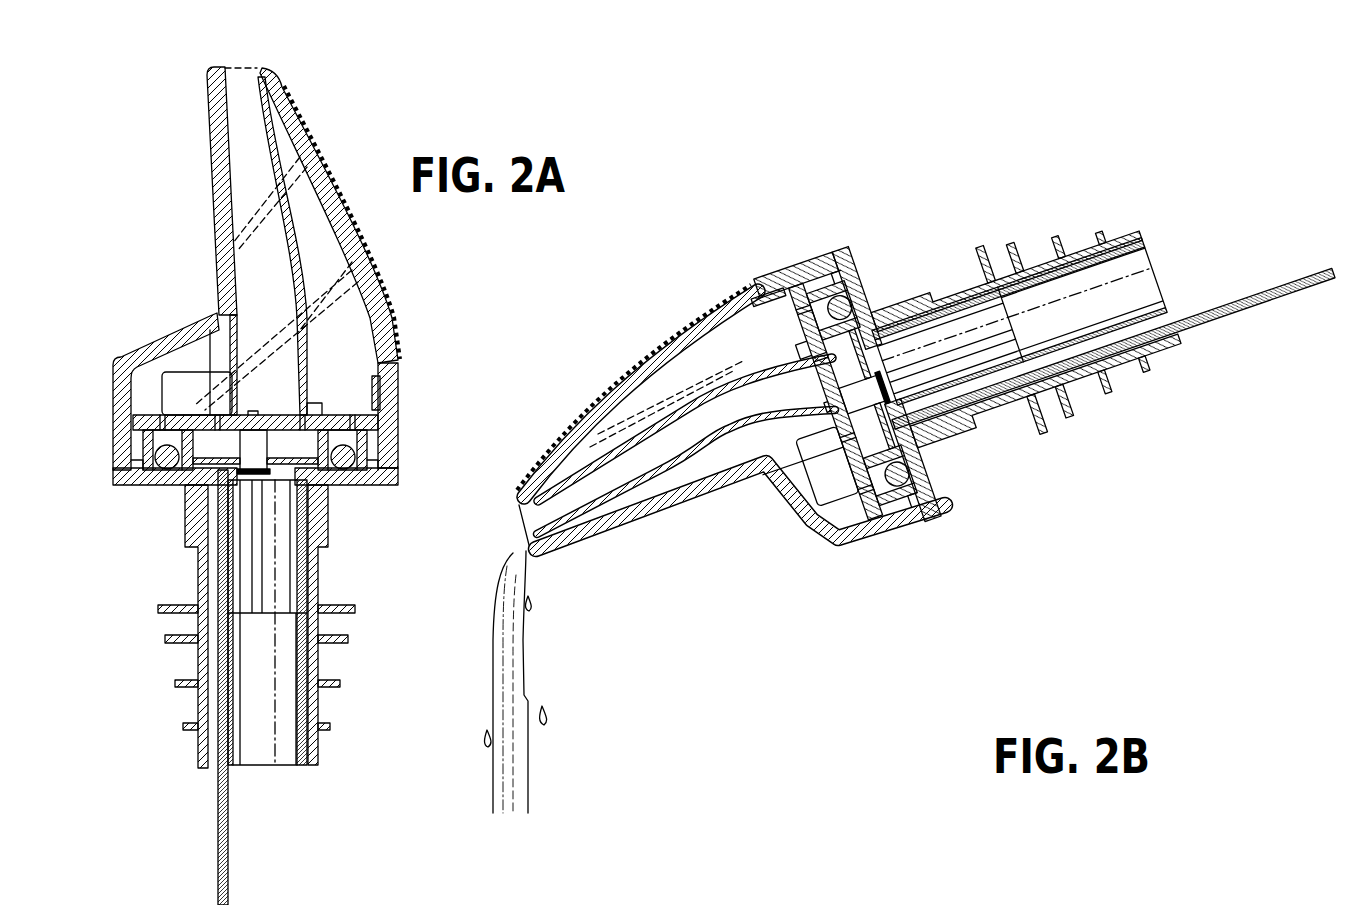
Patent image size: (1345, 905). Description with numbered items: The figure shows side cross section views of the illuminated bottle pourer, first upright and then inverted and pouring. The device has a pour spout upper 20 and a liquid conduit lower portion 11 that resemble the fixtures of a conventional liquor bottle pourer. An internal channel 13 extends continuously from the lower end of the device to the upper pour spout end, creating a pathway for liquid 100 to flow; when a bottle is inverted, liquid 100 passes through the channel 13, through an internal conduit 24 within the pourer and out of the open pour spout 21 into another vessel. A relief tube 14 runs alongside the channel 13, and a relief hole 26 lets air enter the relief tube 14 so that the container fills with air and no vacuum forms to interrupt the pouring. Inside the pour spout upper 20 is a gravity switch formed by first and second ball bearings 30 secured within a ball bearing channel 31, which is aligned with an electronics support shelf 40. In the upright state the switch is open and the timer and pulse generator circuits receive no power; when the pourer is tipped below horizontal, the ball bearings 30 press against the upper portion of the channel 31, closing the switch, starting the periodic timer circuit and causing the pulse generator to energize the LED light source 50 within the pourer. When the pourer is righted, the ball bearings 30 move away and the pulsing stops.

In FIG. 2A, the pour spout upper 20 is at (293, 302).
In FIG. 2A, the pour spout 21 is at (207, 66).
In FIG. 2A, the internal conduit 24 is at (250, 148).
In FIG. 2A, the relief hole 26 is at (168, 314).
In FIG. 2B, the relief hole 26 is at (797, 508).
In FIG. 2A, the electronics support shelf 40 is at (128, 398).
In FIG. 2B, the electronics support shelf 40 is at (826, 262).
In FIG. 2A, the LED light source 50 is at (382, 393).
In FIG. 2B, the LED light source 50 is at (780, 272).
In FIG. 2A, the ball bearing channel 31 is at (150, 440).
In FIG. 2B, the ball bearing channel 31 is at (880, 318).
In FIG. 2A, the ball bearing 30 is at (167, 470).
In FIG. 2B, the ball bearing 30 is at (855, 300).
In FIG. 2A, the liquid conduit lower portion 11 is at (293, 687).
In FIG. 2A, the internal channel 13 is at (287, 748).
In FIG. 2B, the internal channel 13 is at (1152, 270).
In FIG. 2A, the relief tube 14 is at (215, 868).
In FIG. 2B, the relief tube 14 is at (1226, 320).
In FIG. 2B, the liquid 100 is at (518, 668).